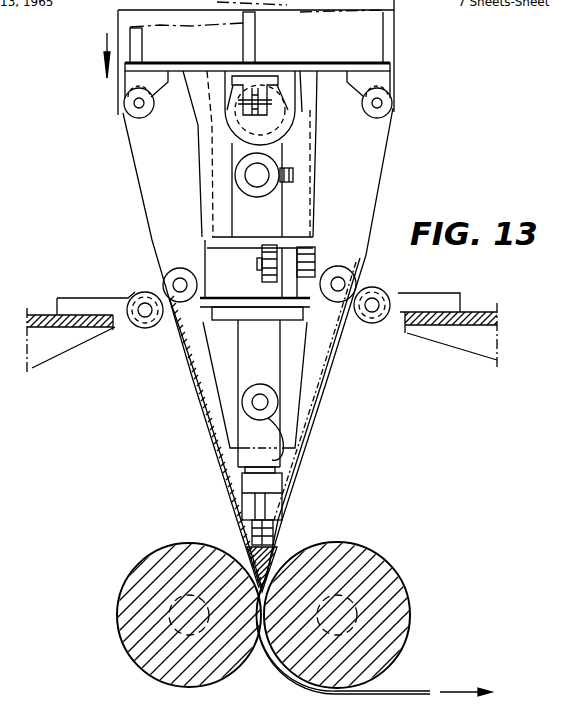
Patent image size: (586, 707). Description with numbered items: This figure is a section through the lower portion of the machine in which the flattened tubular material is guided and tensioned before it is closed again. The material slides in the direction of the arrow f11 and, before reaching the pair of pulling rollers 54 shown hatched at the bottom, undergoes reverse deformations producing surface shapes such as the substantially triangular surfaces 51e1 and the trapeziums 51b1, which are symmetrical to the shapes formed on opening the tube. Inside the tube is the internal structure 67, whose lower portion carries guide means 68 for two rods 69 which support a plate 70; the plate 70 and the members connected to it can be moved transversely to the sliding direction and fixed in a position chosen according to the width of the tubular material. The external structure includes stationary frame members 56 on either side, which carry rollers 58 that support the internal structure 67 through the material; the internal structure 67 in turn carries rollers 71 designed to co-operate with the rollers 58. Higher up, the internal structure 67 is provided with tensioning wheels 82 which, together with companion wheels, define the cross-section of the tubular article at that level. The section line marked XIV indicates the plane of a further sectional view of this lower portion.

The tensioning wheel 82 is at (126, 117).
The internal structure 67 is at (182, 73).
The rod 69 is at (253, 176).
The guide means 68 is at (283, 196).
The roller 71 is at (177, 268).
The roller 58 is at (156, 294).
The stationary frame member 56 is at (50, 298).
The plate 70 is at (212, 375).
The substantially triangular surface 51e1 is at (147, 195).
The trapezium 51b1 is at (228, 478).
The pulling roller 54 is at (175, 543).
The direction of sliding movement f11 is at (107, 47).
The section line XIV is at (34, 694).